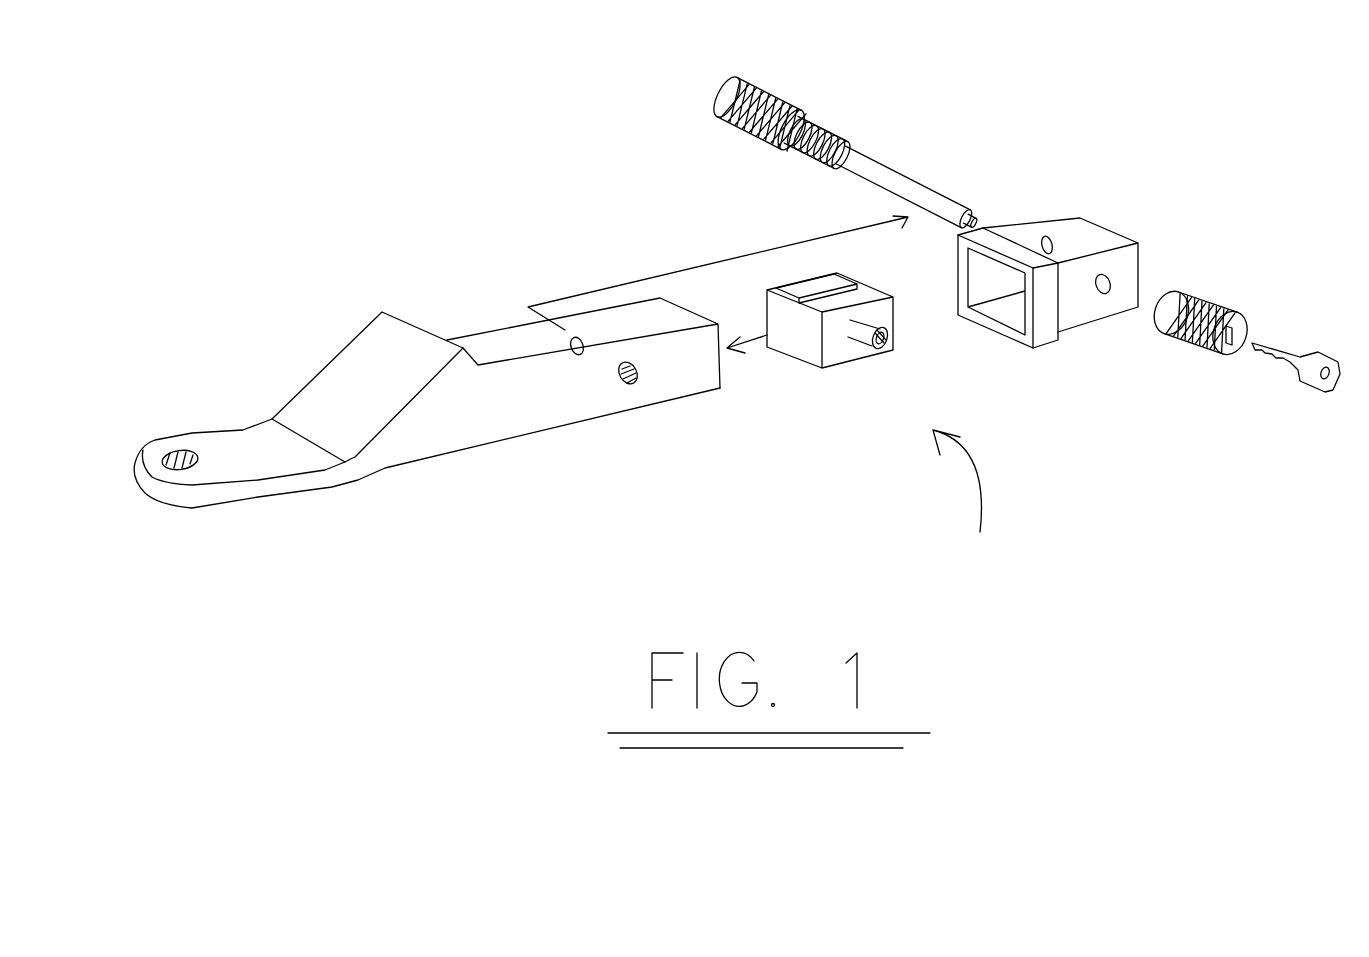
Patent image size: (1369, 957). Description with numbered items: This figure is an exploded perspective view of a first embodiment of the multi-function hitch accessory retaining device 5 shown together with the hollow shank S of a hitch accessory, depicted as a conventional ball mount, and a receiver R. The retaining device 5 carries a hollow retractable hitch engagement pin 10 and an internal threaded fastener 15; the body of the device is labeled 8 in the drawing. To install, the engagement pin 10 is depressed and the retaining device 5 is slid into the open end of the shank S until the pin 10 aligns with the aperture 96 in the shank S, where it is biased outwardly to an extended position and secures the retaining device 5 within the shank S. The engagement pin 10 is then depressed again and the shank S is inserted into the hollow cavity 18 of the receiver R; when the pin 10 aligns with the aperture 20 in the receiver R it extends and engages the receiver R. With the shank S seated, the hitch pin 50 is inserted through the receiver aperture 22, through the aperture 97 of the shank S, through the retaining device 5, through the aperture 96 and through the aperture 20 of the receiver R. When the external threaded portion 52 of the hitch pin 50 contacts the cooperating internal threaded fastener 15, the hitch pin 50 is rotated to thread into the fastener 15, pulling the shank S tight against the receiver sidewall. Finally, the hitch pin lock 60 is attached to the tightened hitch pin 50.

The multi-function hitch accessory retaining device 5 is at (962, 509).
The lock housing 8 is at (780, 308).
The hollow retractable hitch engagement pin 10 is at (877, 347).
The internal threaded fastener 15 is at (813, 282).
The hollow cavity 18 is at (1013, 302).
The aperture 20 is at (1107, 288).
The receiver aperture 22 is at (1047, 238).
The hitch pin 50 is at (895, 178).
The external threaded portion 52 is at (812, 157).
The hitch pin lock 60 is at (1237, 310).
The aperture 96 is at (630, 382).
The aperture 97 is at (580, 338).
The receiver R is at (1146, 312).
The shank S is at (537, 417).